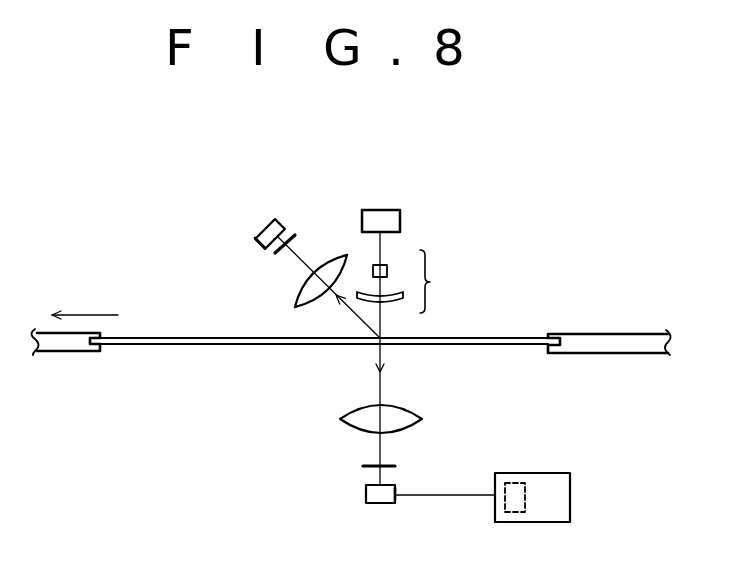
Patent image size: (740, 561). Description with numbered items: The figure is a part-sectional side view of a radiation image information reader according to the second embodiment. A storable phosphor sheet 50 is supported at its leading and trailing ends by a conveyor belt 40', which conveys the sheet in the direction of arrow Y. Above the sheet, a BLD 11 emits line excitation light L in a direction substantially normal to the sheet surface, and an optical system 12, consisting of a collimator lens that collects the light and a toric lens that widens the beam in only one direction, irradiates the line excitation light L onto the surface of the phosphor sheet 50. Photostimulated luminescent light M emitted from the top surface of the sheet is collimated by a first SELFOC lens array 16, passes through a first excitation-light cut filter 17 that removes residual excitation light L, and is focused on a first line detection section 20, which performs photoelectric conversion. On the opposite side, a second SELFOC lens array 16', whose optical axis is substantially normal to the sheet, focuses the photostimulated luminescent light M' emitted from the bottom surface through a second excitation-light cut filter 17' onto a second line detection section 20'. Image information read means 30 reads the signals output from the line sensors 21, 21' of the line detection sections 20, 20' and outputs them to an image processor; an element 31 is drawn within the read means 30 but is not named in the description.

The BLD 11 is at (393, 210).
The optical system 12 is at (431, 282).
The first SELFOC lens array 16 is at (321, 263).
The first excitation-light cut filter 17 is at (298, 221).
The first line detection section 20 is at (254, 212).
The line sensor 21 is at (231, 246).
The conveyor belt 40' is at (69, 365).
The storable phosphor sheet 50 is at (183, 345).
The second SELFOC lens array 16' is at (413, 410).
The second excitation-light cut filter 17' is at (405, 449).
The second line detection section 20' is at (338, 503).
The line sensor 21' is at (428, 481).
The image information read means 30 is at (571, 496).
The computing section 31 is at (513, 514).
The direction of arrow Y is at (82, 313).
The photostimulated luminescent light M is at (329, 287).
The line excitation light L is at (382, 322).
The photostimulated luminescent light M' is at (342, 380).